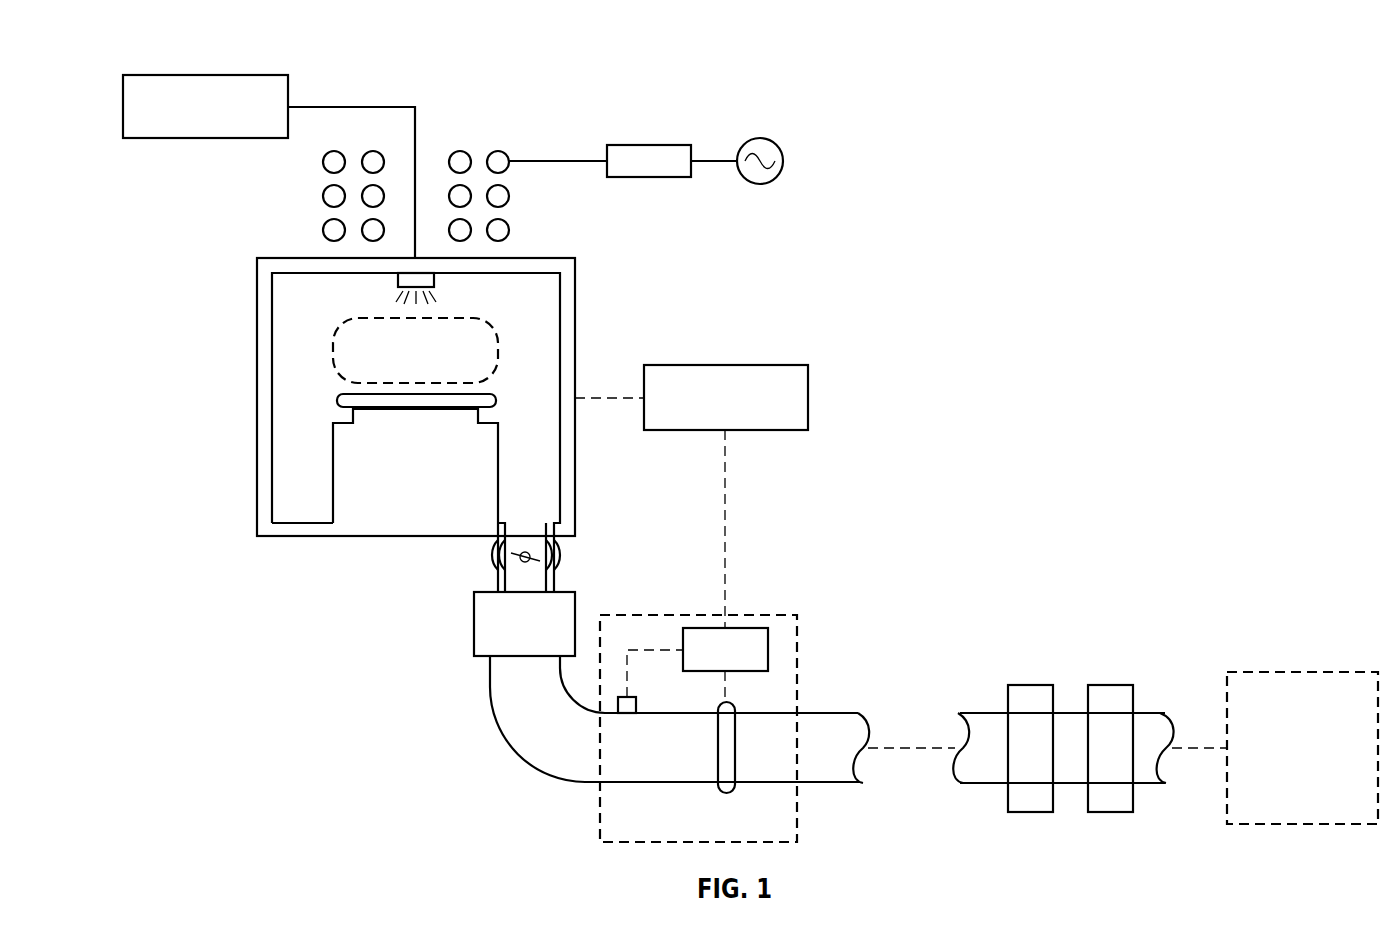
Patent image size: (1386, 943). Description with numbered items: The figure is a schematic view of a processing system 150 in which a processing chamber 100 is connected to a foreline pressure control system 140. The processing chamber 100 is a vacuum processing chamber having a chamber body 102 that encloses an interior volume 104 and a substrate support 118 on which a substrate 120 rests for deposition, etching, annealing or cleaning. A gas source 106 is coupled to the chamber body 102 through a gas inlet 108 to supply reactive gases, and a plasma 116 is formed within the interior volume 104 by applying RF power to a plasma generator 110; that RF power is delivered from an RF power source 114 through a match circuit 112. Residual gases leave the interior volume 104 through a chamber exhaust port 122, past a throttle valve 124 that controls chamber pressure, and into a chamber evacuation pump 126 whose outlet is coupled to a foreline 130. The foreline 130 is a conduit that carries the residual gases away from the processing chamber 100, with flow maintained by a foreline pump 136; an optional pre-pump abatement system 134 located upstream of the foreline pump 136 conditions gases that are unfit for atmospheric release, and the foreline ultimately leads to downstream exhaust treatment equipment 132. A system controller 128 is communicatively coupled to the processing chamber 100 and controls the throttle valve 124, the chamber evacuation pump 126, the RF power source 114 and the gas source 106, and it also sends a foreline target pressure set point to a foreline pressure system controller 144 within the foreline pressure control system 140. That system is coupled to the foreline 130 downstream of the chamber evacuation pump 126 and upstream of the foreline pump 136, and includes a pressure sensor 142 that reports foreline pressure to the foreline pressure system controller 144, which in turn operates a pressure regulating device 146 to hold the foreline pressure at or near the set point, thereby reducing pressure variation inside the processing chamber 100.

The processing chamber 100 is at (138, 371).
The chamber body 102 is at (257, 493).
The interior volume 104 is at (325, 312).
The gas source 106 is at (223, 122).
The gas inlet 108 is at (434, 278).
The plasma generator 110 is at (460, 150).
The match circuit 112 is at (650, 145).
The RF power source 114 is at (783, 163).
The plasma 116 is at (436, 363).
The substrate support 118 is at (437, 493).
The substrate 120 is at (337, 401).
The chamber exhaust port 122 is at (532, 506).
The throttle valve 124 is at (490, 555).
The chamber evacuation pump 126 is at (474, 625).
The system controller 128 is at (747, 410).
The foreline 130 is at (512, 704).
The facility exhaust 132 is at (1305, 672).
The pre-pump abatement system 134 is at (1030, 685).
The foreline pump 136 is at (1110, 685).
The foreline pressure control system 140 is at (593, 810).
The pressure sensor 142 is at (620, 705).
The foreline pressure system controller 144 is at (745, 643).
The pressure regulating device 146 is at (725, 737).
The processing system 150 is at (1147, 111).